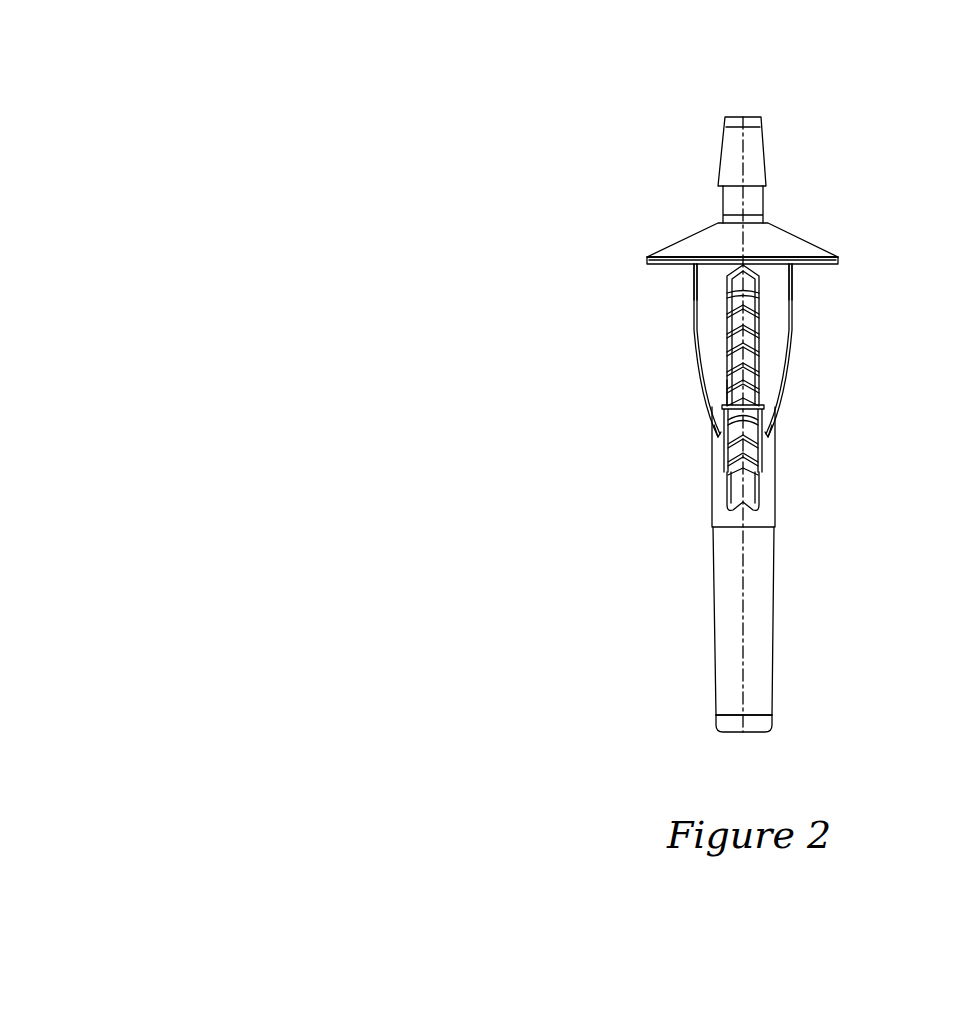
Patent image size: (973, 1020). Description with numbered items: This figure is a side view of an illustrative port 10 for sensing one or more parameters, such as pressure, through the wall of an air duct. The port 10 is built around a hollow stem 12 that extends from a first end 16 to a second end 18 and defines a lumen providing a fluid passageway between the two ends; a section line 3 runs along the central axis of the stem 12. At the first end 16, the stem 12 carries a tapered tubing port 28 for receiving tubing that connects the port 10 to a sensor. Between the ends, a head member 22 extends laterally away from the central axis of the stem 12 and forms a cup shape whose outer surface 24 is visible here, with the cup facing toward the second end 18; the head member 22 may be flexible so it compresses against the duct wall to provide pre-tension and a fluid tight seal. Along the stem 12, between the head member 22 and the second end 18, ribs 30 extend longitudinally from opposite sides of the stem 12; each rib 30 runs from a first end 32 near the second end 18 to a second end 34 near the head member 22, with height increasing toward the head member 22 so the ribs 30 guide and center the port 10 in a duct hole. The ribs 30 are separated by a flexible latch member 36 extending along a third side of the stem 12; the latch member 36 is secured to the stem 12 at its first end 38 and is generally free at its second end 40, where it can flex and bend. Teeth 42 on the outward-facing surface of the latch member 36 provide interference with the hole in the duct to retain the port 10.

The section line 3- 3 is at (743, 77).
The port 10 is at (497, 125).
The hollow stem 12 is at (728, 563).
The first end 16 is at (808, 151).
The second end 18 is at (800, 700).
The head member 22 is at (662, 253).
The outer surface 24 is at (785, 242).
The tubing port 28 is at (725, 119).
The ribs 30 is at (712, 340).
The first end of rib 32 is at (715, 412).
The second end of rib 34 is at (700, 275).
The latch member 36 is at (728, 383).
The first end of latch member 38 is at (748, 495).
The second end of latch member 40 is at (752, 278).
The teeth 42 is at (748, 367).